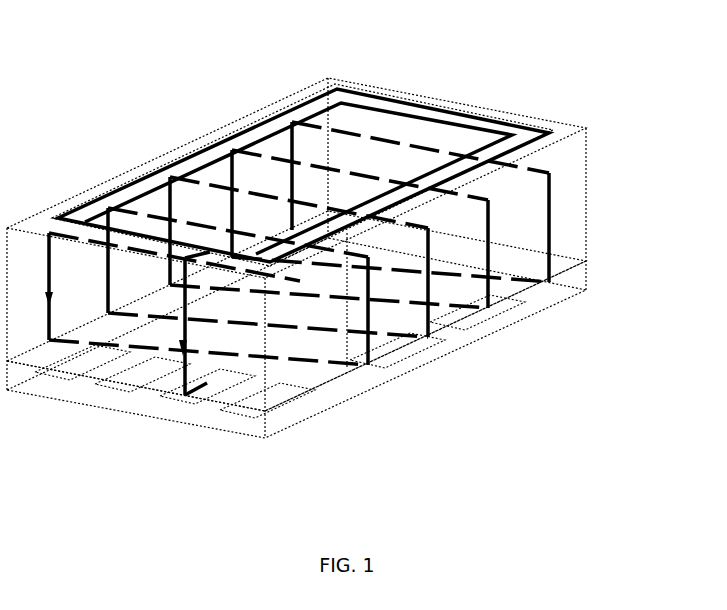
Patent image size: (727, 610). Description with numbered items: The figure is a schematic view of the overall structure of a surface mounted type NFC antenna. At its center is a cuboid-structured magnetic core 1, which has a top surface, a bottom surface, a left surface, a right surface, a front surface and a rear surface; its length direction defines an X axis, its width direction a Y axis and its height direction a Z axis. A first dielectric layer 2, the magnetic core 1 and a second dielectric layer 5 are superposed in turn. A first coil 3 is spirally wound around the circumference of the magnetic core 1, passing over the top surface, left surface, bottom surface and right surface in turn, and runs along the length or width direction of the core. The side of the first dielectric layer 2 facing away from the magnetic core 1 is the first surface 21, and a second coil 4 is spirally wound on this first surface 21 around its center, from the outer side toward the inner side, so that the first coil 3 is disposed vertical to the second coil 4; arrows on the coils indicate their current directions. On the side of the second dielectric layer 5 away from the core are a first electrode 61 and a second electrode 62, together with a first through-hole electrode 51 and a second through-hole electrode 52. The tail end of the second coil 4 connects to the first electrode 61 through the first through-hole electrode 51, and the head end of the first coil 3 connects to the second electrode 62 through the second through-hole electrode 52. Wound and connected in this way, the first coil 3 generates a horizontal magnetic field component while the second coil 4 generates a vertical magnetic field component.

The magnetic core 1 is at (574, 237).
The first dielectric layer 2 is at (556, 153).
The first coil 3 is at (557, 197).
The second coil 4 is at (426, 107).
The first surface 21 is at (474, 112).
The second dielectric layer 5 is at (582, 290).
The first through-hole electrode 51 is at (230, 417).
The second through-hole electrode 52 is at (509, 312).
The first electrode 61 is at (205, 386).
The second electrode 62 is at (348, 307).